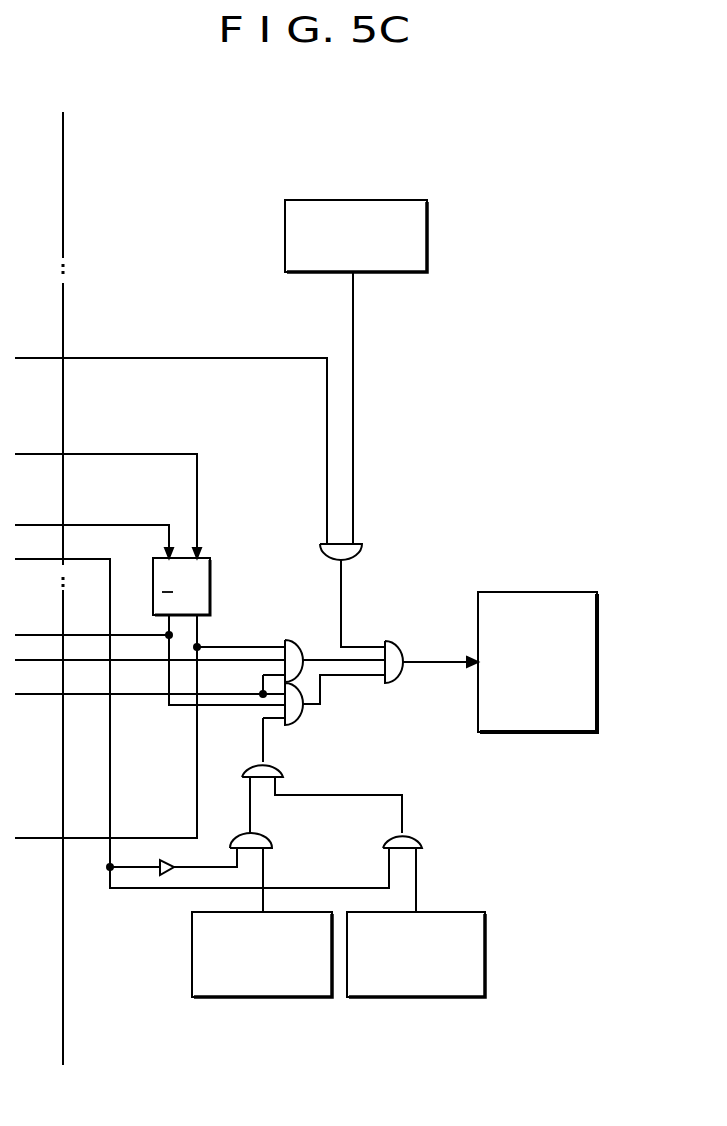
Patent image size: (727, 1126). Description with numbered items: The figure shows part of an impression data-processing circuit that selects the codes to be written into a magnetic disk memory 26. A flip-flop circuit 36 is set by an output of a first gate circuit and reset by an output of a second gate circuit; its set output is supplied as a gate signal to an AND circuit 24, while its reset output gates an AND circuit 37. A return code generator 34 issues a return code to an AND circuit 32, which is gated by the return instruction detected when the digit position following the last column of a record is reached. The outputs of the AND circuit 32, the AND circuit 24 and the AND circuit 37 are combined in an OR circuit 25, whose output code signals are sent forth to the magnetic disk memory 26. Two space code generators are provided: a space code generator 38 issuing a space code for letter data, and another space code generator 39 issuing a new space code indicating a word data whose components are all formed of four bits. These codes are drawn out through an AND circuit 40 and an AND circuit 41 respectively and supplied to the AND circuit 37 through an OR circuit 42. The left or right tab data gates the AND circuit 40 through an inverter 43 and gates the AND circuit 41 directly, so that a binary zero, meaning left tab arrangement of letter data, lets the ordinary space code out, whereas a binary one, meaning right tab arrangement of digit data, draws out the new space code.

The AND circuit 24 is at (295, 653).
The OR circuit 25 is at (398, 654).
The magnetic disk memory 26 is at (553, 605).
The AND circuit 32 is at (348, 549).
The return code generator 34 is at (403, 210).
The flip-flop circuit 36 is at (210, 586).
The AND circuit 37 is at (297, 714).
The space code generator 38 is at (297, 988).
The space code generator 39 is at (450, 988).
The AND circuit 40 is at (257, 848).
The AND circuit 41 is at (410, 848).
The OR circuit 42 is at (281, 771).
The inverter 43 is at (167, 863).